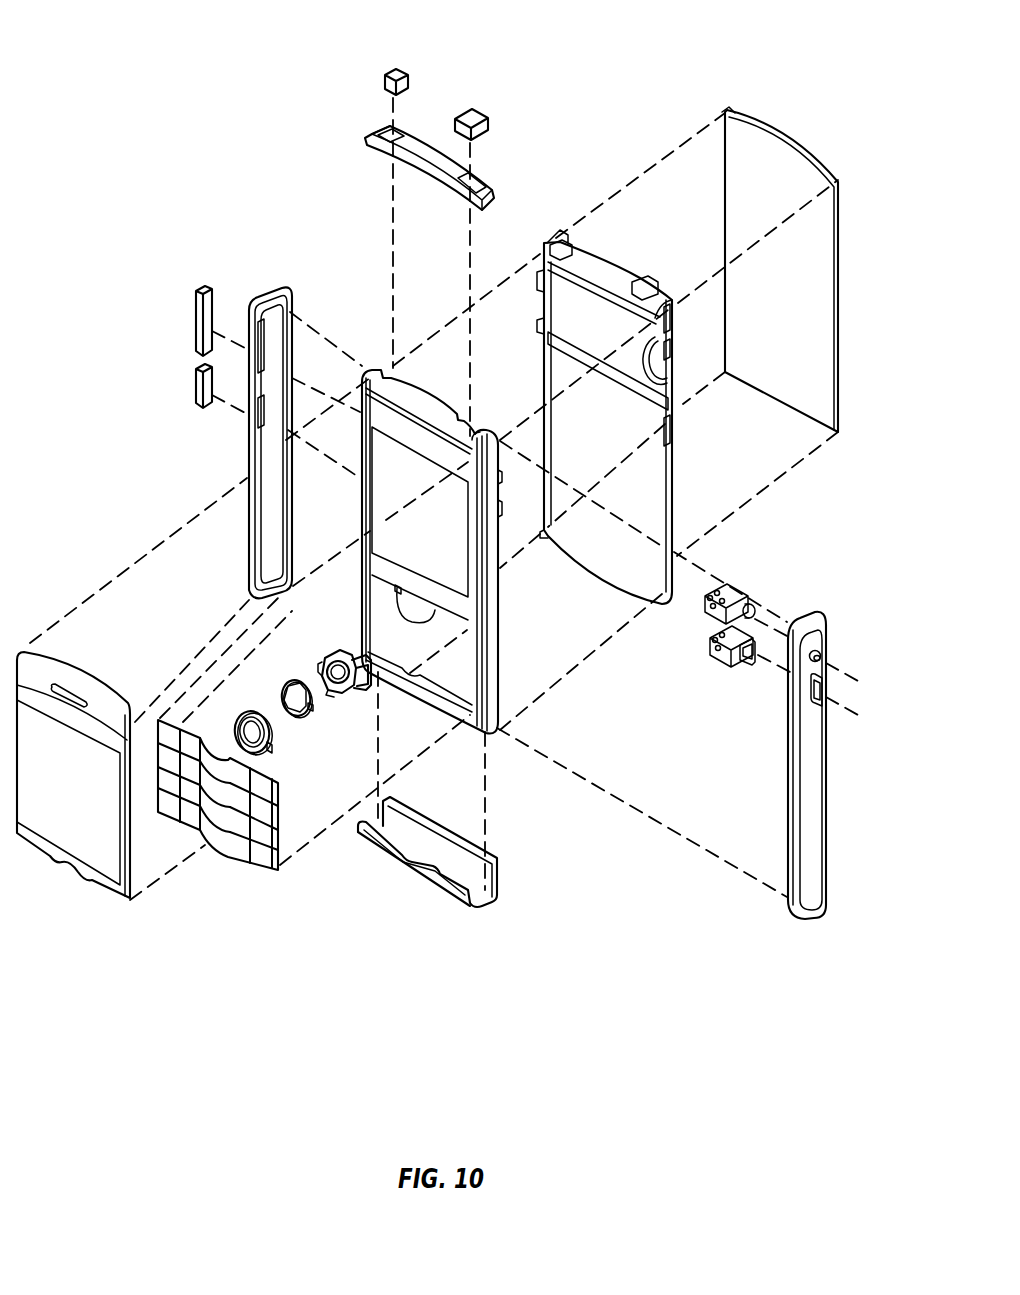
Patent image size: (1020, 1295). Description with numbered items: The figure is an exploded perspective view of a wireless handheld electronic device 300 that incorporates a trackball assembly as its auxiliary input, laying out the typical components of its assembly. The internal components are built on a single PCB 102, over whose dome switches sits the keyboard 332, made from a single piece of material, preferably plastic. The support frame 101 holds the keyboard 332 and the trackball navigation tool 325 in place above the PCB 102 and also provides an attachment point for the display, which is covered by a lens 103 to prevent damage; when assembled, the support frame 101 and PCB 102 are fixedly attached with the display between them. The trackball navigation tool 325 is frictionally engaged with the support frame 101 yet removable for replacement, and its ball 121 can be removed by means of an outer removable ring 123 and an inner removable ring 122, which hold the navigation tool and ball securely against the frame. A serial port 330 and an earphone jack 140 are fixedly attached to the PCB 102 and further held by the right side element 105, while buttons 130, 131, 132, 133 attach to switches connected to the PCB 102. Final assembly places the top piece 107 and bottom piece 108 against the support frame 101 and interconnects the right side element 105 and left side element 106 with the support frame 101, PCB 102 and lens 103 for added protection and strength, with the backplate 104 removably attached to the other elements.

The handheld electronic device 300 is at (208, 44).
The button 130 is at (388, 65).
The button 131 is at (482, 110).
The top piece 107 is at (375, 132).
The backplate 104 is at (792, 127).
The PCB (printed circuit board) 102 is at (630, 248).
The support frame 101 is at (443, 387).
The left side element 106 is at (272, 284).
The button 132 is at (196, 282).
The button 133 is at (192, 362).
The lens 103 is at (90, 668).
The keyboard 332 is at (233, 865).
The outer removable ring 123 is at (268, 760).
The inner removable ring 122 is at (313, 720).
The ball 121 is at (340, 697).
The trackball navigation tool 325 is at (368, 680).
The bottom piece 108 is at (400, 885).
The earphone jack 140 is at (703, 610).
The serial port 330 is at (708, 645).
The right side element 105 is at (782, 755).